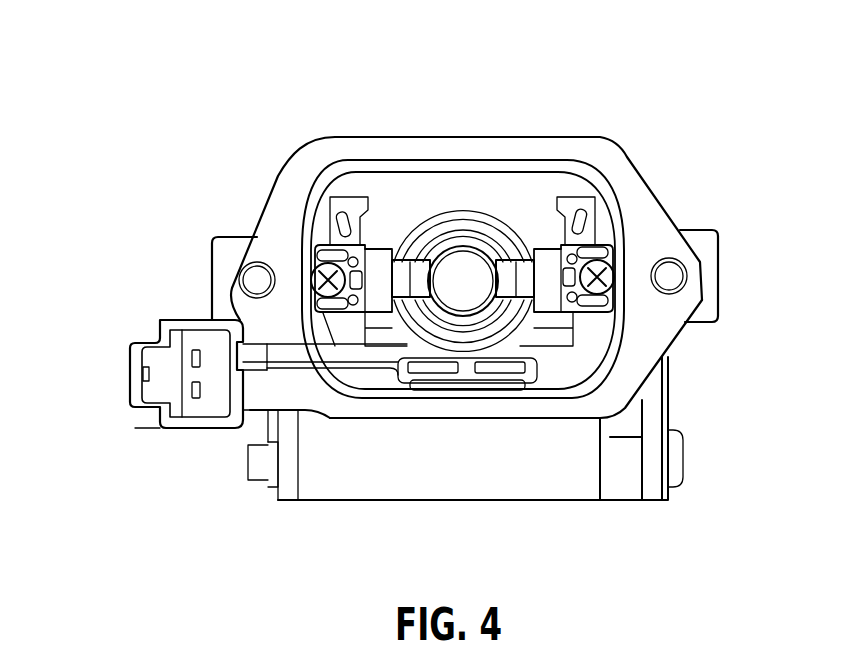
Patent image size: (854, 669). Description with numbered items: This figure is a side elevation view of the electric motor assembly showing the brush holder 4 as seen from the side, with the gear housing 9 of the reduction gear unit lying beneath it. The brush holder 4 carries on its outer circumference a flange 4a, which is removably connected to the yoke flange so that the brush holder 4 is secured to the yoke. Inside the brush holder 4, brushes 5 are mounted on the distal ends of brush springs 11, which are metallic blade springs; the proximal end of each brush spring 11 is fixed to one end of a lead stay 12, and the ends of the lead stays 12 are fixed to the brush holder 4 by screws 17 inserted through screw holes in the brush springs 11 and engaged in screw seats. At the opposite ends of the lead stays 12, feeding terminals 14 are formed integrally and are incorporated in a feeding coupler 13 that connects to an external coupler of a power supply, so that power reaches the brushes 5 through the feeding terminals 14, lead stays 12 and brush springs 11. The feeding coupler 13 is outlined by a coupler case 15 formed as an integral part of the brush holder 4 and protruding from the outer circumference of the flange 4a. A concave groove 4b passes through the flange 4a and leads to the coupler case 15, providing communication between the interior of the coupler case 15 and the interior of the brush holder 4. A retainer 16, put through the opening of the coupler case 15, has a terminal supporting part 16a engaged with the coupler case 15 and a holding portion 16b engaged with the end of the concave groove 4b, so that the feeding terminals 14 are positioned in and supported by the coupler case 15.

The brush holder 4 is at (585, 136).
The flange 4a is at (623, 168).
The concave groove 4b is at (318, 344).
The brush 5 is at (413, 262).
The gear housing 9 is at (487, 472).
The brush spring 11 is at (383, 265).
The lead stay 12 is at (317, 317).
The feeding coupler 13 is at (157, 305).
The feeding terminal 14 is at (192, 390).
The coupler case 15 is at (160, 430).
The retainer 16 is at (225, 428).
The terminal supporting part 16a is at (212, 430).
The holding portion 16b is at (260, 367).
The screw 17 is at (332, 262).